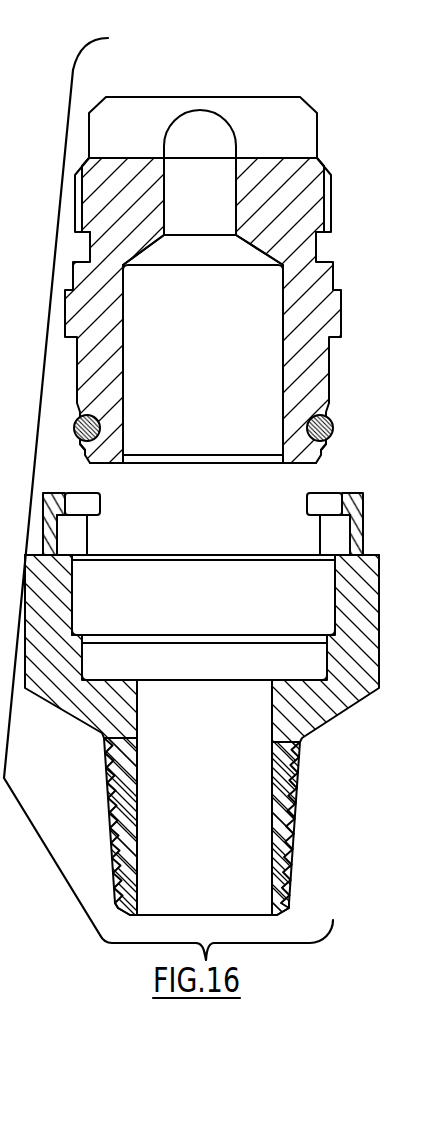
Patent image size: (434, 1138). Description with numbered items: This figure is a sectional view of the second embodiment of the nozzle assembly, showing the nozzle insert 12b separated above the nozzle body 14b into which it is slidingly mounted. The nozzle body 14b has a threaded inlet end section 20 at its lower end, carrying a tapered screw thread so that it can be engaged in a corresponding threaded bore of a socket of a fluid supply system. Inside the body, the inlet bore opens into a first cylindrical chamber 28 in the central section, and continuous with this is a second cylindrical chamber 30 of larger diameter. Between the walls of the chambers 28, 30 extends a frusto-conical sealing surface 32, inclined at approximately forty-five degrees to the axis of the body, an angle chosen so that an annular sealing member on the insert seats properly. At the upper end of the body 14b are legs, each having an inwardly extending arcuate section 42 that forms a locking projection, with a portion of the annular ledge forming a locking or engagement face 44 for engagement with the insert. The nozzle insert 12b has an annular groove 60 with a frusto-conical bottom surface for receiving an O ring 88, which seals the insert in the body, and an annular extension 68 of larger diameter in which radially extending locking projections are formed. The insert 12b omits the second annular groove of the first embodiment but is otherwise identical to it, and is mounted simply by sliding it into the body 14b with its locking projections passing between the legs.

The nozzle insert 12b is at (322, 357).
The annular extension 68 is at (316, 309).
The annular groove 60 is at (323, 410).
The O ring 88 is at (331, 441).
The nozzle body 14b is at (370, 662).
The inlet end section 20 is at (292, 842).
The second cylindrical chamber 30 is at (334, 593).
The first cylindrical chamber 28 is at (330, 662).
The frusto-conical sealing surface 32 is at (84, 638).
The arcuate section 42 is at (351, 494).
The engagement face 44 is at (318, 517).